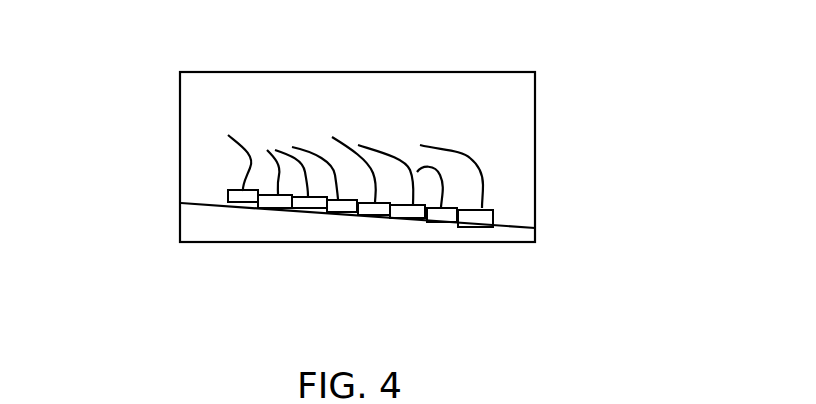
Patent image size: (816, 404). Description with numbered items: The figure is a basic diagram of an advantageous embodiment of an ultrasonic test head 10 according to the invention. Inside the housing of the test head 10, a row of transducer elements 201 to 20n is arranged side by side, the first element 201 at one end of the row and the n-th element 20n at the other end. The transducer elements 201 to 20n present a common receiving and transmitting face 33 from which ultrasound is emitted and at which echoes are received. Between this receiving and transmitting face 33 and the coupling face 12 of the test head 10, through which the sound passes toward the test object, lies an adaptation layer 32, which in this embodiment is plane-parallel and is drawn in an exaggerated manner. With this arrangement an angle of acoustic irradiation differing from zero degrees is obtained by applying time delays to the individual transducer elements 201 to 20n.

The ultrasonic test head 10 is at (553, 102).
The coupling face 12 is at (360, 243).
The adaptation layer 32 is at (197, 222).
The receiving and transmitting face 33 is at (308, 214).
The transducer element 201 is at (248, 198).
The transducer element 20n is at (482, 210).